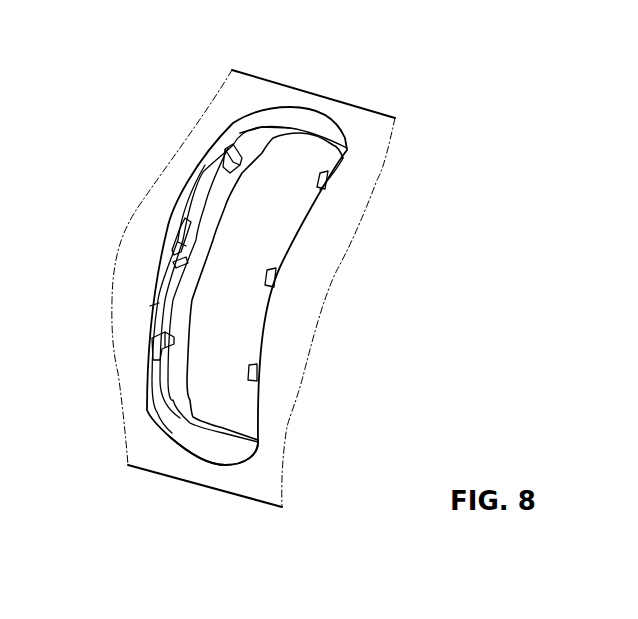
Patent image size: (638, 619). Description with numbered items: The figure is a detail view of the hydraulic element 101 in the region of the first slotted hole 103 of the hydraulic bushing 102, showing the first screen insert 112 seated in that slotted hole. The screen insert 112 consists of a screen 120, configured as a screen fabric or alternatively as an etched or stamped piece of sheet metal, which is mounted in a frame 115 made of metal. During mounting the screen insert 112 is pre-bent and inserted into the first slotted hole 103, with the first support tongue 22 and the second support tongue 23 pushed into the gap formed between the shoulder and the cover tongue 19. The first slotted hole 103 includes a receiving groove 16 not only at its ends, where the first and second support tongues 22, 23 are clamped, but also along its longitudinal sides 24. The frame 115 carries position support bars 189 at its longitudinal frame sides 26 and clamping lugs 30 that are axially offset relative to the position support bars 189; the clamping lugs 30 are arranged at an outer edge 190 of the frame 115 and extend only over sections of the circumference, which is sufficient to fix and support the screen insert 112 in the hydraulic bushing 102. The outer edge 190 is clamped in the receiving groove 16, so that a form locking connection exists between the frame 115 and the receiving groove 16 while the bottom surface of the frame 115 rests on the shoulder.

The hydraulic element 101 is at (430, 177).
The hydraulic bushing 102 is at (372, 108).
The first slotted hole 103 is at (312, 118).
The screen insert 112 is at (262, 128).
The frame 115 is at (213, 188).
The screen 120 is at (214, 307).
The receiving groove 16 is at (207, 201).
The cover tongue 19 is at (190, 458).
The first support tongue 22 is at (250, 128).
The second support tongue 23 is at (167, 412).
The longitudinal side 24 is at (148, 310).
The longitudinal frame side 26 is at (172, 315).
The clamping lug 30 is at (156, 280).
The position support bar 189 is at (145, 343).
The outer edge 190 is at (176, 226).